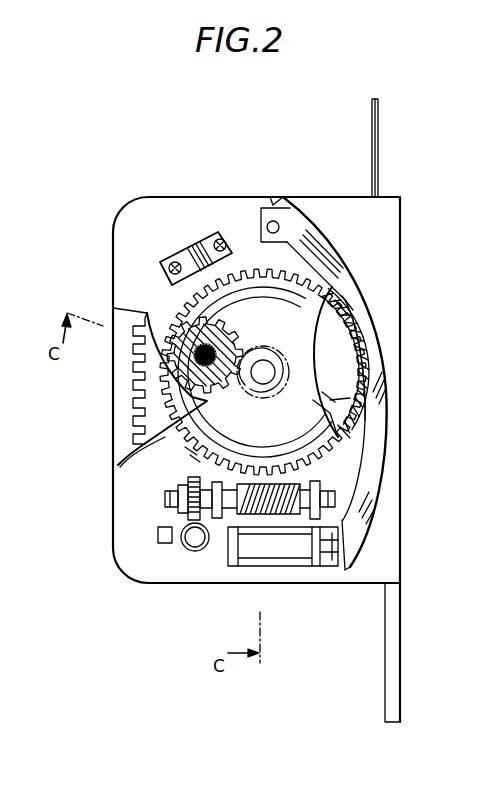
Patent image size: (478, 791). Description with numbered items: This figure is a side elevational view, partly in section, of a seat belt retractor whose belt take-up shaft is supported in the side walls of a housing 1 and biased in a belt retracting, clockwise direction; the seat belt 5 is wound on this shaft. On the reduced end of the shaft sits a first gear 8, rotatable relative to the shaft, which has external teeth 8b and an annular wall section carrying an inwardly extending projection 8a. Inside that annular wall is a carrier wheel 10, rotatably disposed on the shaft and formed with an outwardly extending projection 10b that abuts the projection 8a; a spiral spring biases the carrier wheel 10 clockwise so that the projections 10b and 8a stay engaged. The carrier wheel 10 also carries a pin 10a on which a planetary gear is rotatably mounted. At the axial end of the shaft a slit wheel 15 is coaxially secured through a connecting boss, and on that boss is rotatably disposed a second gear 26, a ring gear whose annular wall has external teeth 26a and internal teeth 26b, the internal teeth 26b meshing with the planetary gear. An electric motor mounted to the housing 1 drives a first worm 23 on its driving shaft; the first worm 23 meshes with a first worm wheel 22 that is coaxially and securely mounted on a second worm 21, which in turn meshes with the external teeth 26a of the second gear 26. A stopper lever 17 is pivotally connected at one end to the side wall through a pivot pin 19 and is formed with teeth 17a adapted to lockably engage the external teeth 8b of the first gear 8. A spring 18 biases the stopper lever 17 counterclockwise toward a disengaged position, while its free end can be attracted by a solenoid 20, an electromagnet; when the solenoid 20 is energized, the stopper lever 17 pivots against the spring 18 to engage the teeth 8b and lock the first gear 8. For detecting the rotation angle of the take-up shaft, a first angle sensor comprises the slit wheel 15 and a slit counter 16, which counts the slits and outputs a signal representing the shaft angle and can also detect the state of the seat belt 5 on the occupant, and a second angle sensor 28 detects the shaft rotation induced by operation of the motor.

The housing 1 is at (185, 193).
The seat belt 5 is at (379, 140).
The first gear 8 is at (340, 417).
The inwardly extending projection 8a is at (347, 443).
The external teeth 8b is at (370, 323).
The carrier wheel 10 is at (330, 360).
The pin 10a is at (167, 362).
The outwardly extending projection 10b is at (330, 400).
The slit wheel 15 is at (158, 408).
The slit counter 16 is at (192, 244).
The stopper lever 17 is at (370, 490).
The teeth 17a is at (367, 372).
The spring 18 is at (273, 205).
The pivot pin 19 is at (280, 227).
The solenoid 20 is at (293, 562).
The second worm 21 is at (248, 503).
The first worm wheel 22 is at (187, 517).
The first worm 23 is at (190, 552).
The second gear 26 is at (150, 440).
The external teeth 26a is at (193, 448).
The internal teeth 26b is at (190, 453).
The second angle sensor 28 is at (158, 546).